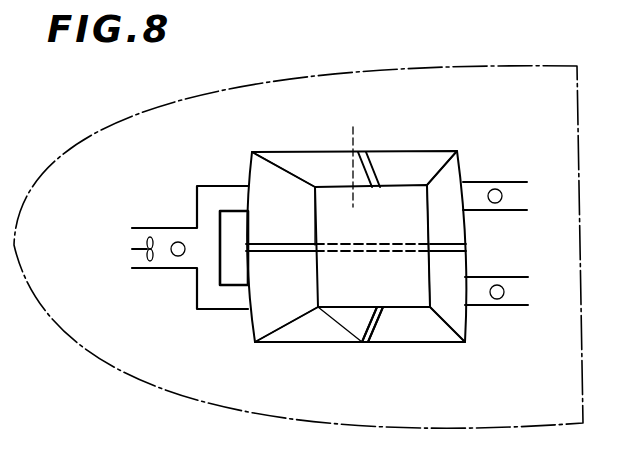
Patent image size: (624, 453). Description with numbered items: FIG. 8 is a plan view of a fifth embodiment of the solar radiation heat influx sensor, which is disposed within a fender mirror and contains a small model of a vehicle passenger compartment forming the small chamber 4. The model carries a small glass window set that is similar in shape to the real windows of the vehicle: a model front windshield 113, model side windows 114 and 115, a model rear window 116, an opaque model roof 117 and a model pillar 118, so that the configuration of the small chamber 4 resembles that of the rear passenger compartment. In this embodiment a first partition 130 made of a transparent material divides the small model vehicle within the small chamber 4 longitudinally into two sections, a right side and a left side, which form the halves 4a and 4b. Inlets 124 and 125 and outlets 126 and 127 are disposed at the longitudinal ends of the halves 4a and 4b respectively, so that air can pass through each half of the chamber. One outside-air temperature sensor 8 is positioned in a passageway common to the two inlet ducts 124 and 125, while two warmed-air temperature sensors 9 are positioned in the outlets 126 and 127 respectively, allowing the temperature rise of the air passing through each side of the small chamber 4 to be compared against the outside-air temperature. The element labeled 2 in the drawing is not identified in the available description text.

The propeller 2 is at (144, 247).
The small chamber 4 is at (356, 224).
The half of the small chamber 4a is at (328, 198).
The half of the small chamber 4b is at (412, 269).
The outside-air temperature sensor 8 is at (177, 256).
The warmed-air temperature sensors 9 is at (495, 189).
The model front windshield 113 is at (280, 313).
The model side window 114 is at (340, 320).
The model side window 115 is at (415, 327).
The model rear window 116 is at (453, 315).
The model roof 117 is at (407, 198).
The model pillar 118 is at (378, 330).
The inlet 124 is at (225, 195).
The inlet 125 is at (225, 297).
The outlet 126 is at (518, 203).
The outlet 127 is at (522, 298).
The first partition 130 is at (273, 241).